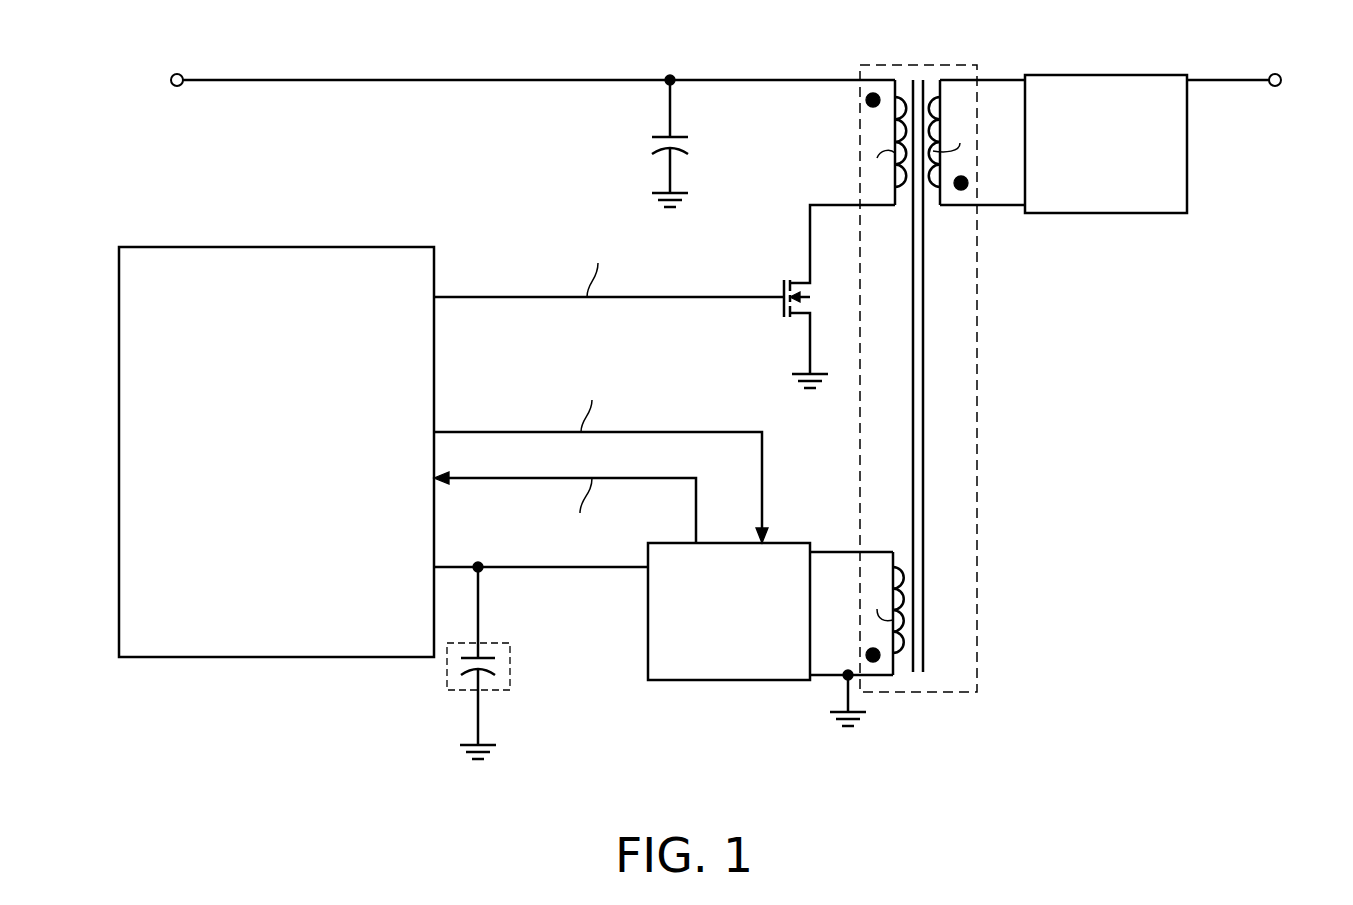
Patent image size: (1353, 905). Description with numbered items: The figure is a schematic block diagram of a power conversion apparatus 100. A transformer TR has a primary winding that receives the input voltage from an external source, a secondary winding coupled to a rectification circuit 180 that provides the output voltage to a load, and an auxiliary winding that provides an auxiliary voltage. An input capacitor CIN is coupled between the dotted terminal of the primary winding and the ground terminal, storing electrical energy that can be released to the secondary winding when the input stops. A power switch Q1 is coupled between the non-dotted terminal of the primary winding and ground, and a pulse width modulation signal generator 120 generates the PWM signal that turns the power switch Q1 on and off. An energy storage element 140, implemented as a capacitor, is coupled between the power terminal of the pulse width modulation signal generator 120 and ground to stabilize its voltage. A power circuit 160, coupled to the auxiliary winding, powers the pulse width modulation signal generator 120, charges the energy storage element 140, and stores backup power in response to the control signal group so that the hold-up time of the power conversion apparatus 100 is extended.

The power conversion apparatus 100 is at (1138, 800).
The pulse width modulation signal generator 120 is at (289, 247).
The energy storage element 140 is at (512, 667).
The power circuit 160 is at (728, 680).
The rectification circuit 180 is at (1105, 213).
The transformer TR is at (910, 65).
The power switch Q1 is at (839, 289).
The input capacitor CIN is at (690, 136).